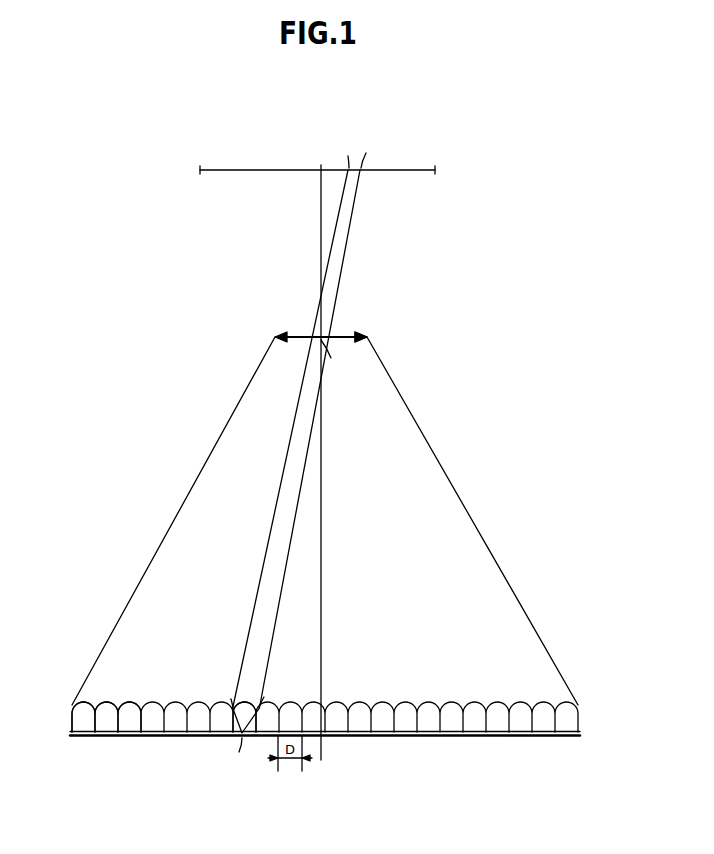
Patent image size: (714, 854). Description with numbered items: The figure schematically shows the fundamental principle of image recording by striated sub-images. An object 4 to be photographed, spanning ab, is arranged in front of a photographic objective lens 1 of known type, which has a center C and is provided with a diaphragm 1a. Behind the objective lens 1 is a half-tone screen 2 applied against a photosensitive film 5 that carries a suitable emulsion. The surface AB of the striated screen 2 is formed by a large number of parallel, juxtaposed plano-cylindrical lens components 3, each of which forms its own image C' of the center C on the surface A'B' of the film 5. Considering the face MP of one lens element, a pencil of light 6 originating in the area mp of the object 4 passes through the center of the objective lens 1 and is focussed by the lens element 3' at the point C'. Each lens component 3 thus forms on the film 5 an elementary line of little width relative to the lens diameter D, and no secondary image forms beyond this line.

The photographic objective lens 1 is at (348, 329).
The diaphragm 1a is at (374, 337).
The half-tone screen 2 is at (456, 692).
The plano-cylindrical lens components 3 is at (106, 692).
The lens element 3' is at (248, 753).
The object 4 is at (244, 163).
The photosensitive film 5 is at (128, 738).
The pencil of light 6 is at (343, 240).